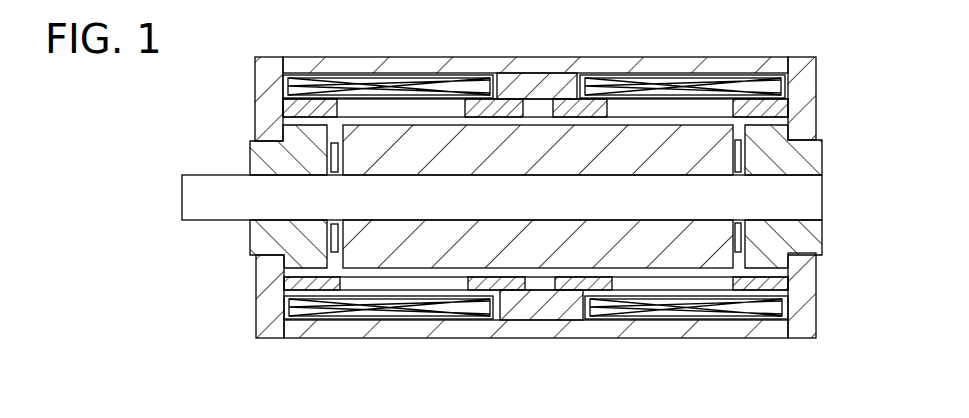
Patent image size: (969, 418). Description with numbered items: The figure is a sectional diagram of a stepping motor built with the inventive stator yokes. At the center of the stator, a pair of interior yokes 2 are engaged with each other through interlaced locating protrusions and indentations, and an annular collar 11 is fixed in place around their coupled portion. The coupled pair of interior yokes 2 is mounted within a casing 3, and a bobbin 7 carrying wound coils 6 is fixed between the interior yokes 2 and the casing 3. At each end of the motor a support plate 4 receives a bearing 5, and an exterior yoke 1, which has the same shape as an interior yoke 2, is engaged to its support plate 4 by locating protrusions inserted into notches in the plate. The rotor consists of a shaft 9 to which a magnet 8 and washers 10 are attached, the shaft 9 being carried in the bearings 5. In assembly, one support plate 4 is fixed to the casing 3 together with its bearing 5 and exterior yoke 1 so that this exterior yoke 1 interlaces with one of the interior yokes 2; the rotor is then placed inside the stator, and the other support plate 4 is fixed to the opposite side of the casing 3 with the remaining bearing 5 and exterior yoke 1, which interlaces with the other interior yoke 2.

The exterior yoke 1 is at (301, 110).
The interior yoke 2 is at (508, 107).
The casing 3 is at (366, 64).
The support plate 4 is at (268, 80).
The bearing 5 is at (273, 241).
The coil 6 is at (400, 313).
The bobbin 7 is at (490, 308).
The magnet 8 is at (415, 142).
The shaft 9 is at (192, 187).
The washer 10 is at (333, 167).
The annular collar 11 is at (525, 312).